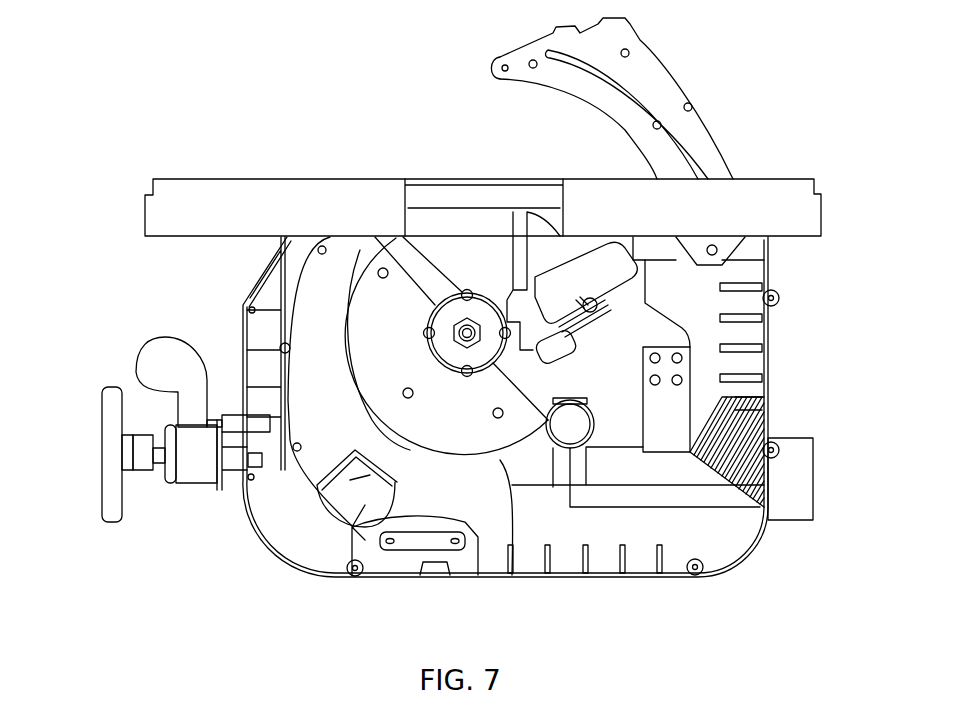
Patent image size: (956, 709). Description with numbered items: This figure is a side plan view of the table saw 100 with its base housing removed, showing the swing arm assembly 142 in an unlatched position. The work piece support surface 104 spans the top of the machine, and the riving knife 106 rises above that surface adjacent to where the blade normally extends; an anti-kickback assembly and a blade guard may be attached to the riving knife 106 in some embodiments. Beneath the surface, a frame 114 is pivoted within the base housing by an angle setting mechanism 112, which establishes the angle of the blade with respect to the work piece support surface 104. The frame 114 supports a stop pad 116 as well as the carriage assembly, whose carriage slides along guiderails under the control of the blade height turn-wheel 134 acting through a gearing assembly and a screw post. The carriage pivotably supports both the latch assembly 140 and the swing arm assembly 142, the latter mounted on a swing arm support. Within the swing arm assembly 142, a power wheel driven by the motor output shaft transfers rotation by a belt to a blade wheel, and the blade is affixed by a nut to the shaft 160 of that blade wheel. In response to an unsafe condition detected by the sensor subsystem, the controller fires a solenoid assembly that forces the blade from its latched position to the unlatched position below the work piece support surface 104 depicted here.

The table saw 100 is at (142, 100).
The work piece support surface 104 is at (800, 178).
The riving knife 106 is at (517, 57).
The angle setting mechanism 112 is at (145, 345).
The frame 114 is at (770, 325).
The stop pad 116 is at (508, 560).
The blade height turn-wheel 134 is at (107, 385).
The latch assembly 140 is at (560, 365).
The swing arm assembly 142 is at (430, 258).
The shaft 160 is at (491, 300).